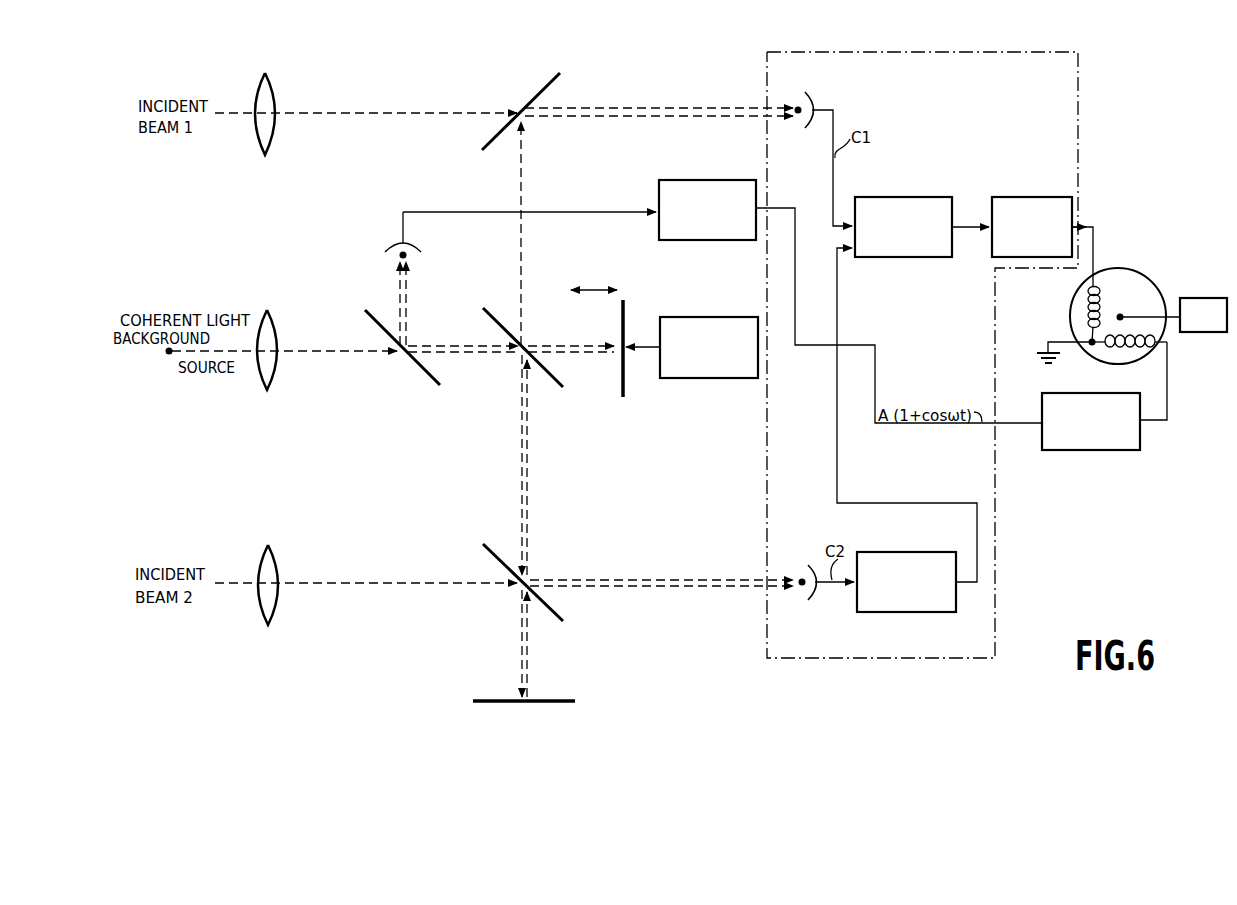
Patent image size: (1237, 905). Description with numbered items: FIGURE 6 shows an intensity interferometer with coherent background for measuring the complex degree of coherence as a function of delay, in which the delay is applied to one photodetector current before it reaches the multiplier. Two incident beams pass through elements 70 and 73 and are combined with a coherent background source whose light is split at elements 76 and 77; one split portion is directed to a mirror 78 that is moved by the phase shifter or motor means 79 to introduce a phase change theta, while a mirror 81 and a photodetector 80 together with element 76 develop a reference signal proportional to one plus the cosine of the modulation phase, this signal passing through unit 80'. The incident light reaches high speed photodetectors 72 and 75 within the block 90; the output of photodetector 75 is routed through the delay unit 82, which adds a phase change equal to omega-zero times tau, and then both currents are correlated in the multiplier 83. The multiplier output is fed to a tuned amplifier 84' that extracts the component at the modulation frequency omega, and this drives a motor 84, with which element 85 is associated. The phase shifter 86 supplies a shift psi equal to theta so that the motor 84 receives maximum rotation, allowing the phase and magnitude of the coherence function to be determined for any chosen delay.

The beam splitter 70 is at (544, 88).
The photodetector 72 is at (814, 93).
The beam splitter 73 is at (563, 622).
The photodetector 75 is at (812, 601).
The signal developing means 76 is at (431, 375).
The beam splitter 77 is at (563, 384).
The mirror 78 is at (620, 384).
The phase shifter 79 is at (683, 379).
The signal developing means 80 is at (427, 235).
The tuned amplifier 80' is at (707, 191).
The signal developing means 81 is at (572, 703).
The delay unit 82 is at (902, 613).
The multiplier 83 is at (923, 197).
The motor 84 is at (1135, 300).
The tuned amplifier 84' is at (1032, 211).
The RPM indicator 85 is at (1190, 334).
The phase shifter 86 is at (1077, 451).
The block 90 is at (943, 30).